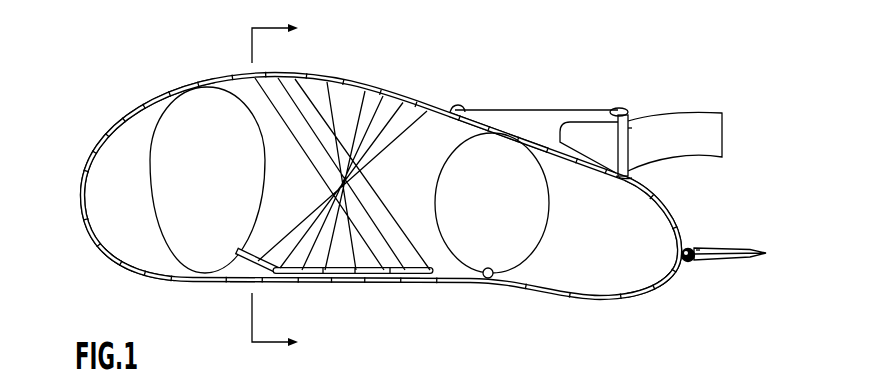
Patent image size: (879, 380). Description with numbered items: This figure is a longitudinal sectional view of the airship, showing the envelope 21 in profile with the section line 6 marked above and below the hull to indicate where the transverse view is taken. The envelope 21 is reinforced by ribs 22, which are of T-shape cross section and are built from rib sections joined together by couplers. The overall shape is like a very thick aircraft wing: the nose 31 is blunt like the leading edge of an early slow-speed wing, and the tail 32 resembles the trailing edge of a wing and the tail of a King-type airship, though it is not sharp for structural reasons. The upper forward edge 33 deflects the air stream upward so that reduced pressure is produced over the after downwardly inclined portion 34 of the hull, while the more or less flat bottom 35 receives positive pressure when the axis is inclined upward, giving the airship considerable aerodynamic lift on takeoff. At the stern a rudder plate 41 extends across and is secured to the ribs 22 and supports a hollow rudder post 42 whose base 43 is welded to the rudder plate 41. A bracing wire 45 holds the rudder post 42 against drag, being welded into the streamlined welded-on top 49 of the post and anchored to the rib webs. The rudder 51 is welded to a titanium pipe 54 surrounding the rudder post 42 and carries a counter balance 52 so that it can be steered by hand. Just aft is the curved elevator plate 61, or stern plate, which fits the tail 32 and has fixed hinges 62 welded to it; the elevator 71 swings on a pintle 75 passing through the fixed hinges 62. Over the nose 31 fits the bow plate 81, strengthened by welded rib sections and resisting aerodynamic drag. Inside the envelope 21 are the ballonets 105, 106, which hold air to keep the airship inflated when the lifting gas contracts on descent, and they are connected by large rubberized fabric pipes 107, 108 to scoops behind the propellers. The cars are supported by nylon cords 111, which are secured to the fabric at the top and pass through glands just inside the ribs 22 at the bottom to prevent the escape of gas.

The section line 6- 6 is at (266, 187).
The envelope 21 is at (106, 250).
The ribs 22 is at (371, 80).
The nose 31 is at (76, 246).
The tail 32 is at (700, 226).
The upper forward edge 33 is at (126, 99).
The after downwardly inclined portion 34 is at (503, 118).
The flat bottom 35 is at (231, 294).
The rudder plate 41 is at (656, 206).
The rudder post 42 is at (629, 125).
The base 43 is at (633, 178).
The bracing wire 45 is at (532, 108).
The streamlined welded-on top 49 is at (618, 107).
The rudder 51 is at (714, 132).
The counter balance 52 is at (582, 121).
The titanium pipe 54 is at (633, 130).
The elevator plate 61 is at (682, 222).
The fixed hinges 62 is at (702, 251).
The elevator 71 is at (745, 260).
The pintle 75 is at (697, 262).
The bow plate 81 is at (82, 173).
The ballonet 105 is at (550, 206).
The ballonet 106 is at (151, 183).
The rubberized fabric pipe 107 is at (489, 267).
The rubberized fabric pipe 108 is at (257, 257).
The cords 111 is at (334, 123).